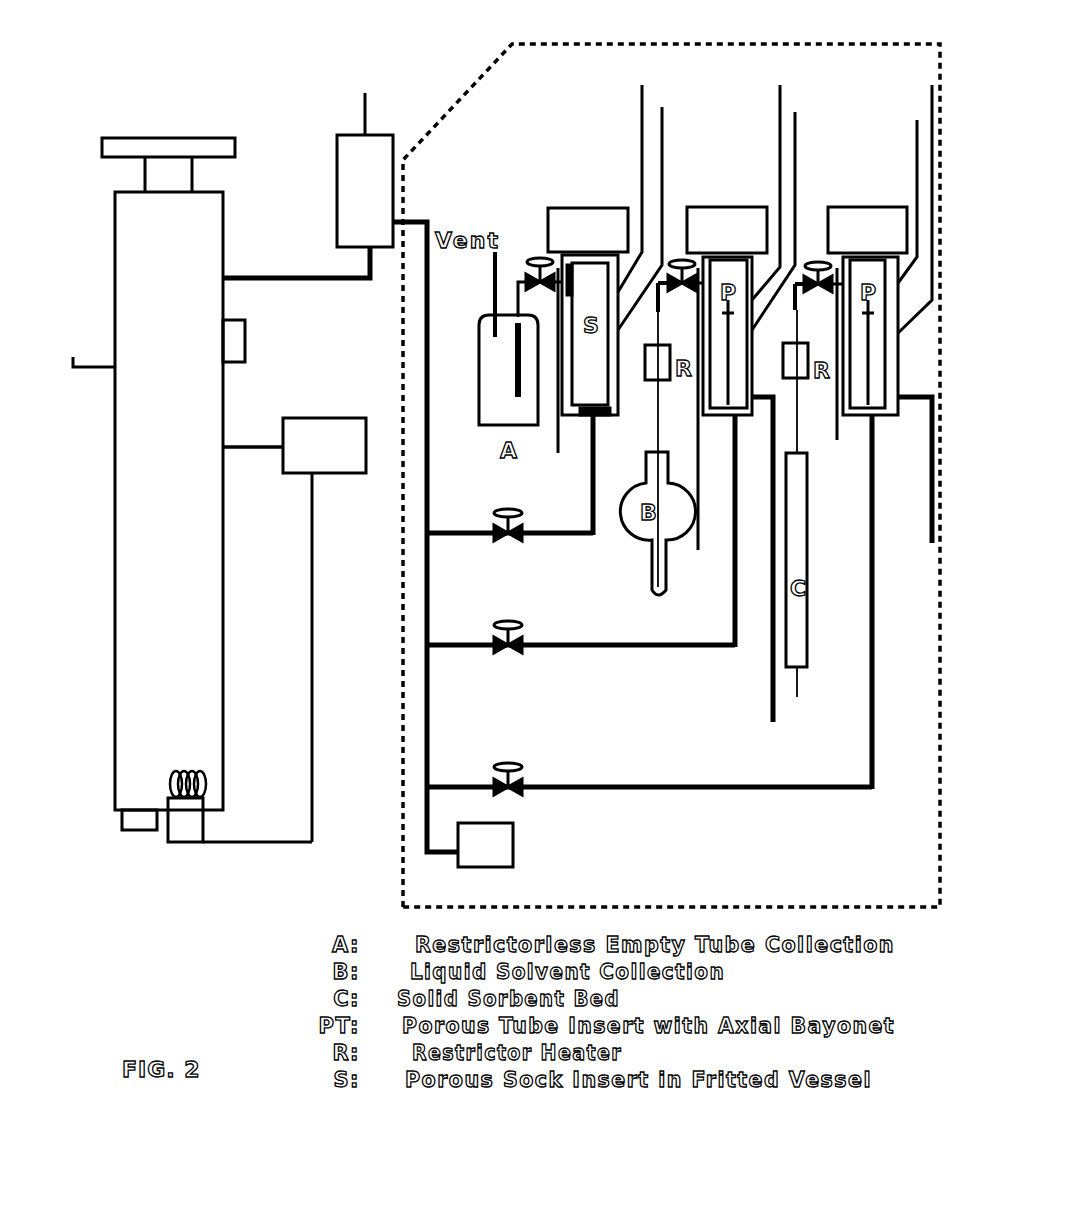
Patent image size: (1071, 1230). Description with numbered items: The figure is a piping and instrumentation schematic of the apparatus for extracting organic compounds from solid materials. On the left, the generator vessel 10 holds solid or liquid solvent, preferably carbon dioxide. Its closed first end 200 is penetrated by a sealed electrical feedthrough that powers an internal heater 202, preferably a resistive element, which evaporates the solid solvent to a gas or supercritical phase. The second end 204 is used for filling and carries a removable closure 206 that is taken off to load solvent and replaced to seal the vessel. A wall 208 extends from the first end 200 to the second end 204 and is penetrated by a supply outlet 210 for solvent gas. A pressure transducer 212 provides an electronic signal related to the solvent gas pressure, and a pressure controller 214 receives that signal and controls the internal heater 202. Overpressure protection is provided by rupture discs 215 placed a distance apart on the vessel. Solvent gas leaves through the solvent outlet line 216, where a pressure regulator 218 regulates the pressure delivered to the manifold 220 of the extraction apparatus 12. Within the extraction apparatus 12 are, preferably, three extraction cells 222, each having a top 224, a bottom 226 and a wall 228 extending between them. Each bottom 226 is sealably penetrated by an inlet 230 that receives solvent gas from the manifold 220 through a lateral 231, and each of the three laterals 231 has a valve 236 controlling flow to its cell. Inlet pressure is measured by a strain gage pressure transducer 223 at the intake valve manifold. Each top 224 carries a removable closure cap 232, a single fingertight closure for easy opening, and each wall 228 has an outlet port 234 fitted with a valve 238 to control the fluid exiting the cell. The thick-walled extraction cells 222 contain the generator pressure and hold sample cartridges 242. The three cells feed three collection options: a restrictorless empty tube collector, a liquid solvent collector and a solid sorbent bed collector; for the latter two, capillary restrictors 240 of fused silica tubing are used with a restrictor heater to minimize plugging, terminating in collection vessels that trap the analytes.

The generator vessel 10 is at (103, 517).
The extraction apparatus 12 is at (470, 78).
The first end 200 is at (225, 817).
The internal heater 202 is at (212, 768).
The second end 204 is at (103, 193).
The removable closure 206 is at (135, 132).
The wall 208 is at (87, 351).
The supply outlet 210 is at (230, 268).
The pressure transducer 212 is at (230, 453).
The pressure controller 214 is at (294, 630).
The rupture disc 215 is at (248, 348).
The solvent outlet line 216 is at (318, 283).
The pressure regulator 218 is at (366, 156).
The manifold 220 is at (435, 528).
The extraction cell 222 is at (773, 180).
The strain gage pressure transducer 223 is at (513, 845).
The top 224 is at (543, 208).
The bottom 226 is at (706, 602).
The wall 228 is at (778, 196).
The inlet 230 is at (598, 420).
The lateral 231 is at (472, 540).
The removable closure cap 232 is at (607, 208).
The outlet port 234 is at (572, 420).
The valve 236 is at (530, 542).
The valve 238 is at (535, 256).
The capillary restrictor 240 is at (654, 528).
The sample cartridge 242 is at (842, 576).